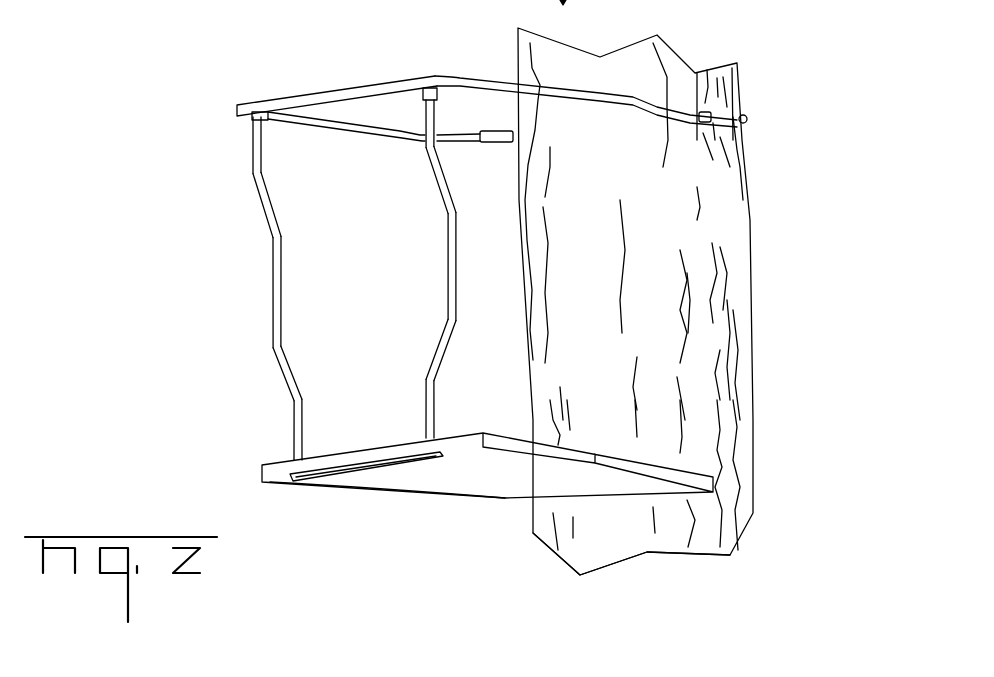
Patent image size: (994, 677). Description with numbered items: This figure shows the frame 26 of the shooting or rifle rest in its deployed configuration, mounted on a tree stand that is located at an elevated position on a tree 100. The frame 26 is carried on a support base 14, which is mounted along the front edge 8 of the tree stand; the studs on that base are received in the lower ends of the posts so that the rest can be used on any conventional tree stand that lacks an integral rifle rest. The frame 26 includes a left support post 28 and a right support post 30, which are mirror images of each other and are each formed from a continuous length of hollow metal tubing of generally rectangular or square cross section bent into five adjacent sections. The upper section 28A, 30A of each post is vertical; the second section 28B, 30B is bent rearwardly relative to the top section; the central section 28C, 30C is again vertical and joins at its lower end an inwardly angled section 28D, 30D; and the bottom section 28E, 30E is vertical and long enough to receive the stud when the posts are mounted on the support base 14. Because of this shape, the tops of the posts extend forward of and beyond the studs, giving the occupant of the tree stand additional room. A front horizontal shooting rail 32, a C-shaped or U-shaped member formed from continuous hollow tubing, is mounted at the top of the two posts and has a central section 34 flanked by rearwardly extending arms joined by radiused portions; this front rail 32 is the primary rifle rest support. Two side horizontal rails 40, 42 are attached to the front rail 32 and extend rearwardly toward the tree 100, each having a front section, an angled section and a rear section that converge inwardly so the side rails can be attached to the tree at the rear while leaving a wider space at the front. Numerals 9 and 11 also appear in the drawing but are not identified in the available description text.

The front edge 8 is at (439, 486).
The base plate underside 9 is at (500, 478).
The wall bottom 11 is at (631, 576).
The support base 14 is at (350, 477).
The rifle rest frame 26 is at (417, 230).
The left support post 28 is at (237, 288).
The upper section 28A is at (299, 148).
The second section 28B is at (280, 215).
The central section 28C is at (285, 277).
The inwardly angled section 28D is at (290, 358).
The bottom section 28E is at (305, 443).
The right support post 30 is at (524, 263).
The upper section 30A is at (437, 117).
The second section 30B is at (452, 175).
The central section 30C is at (456, 289).
The inwardly angled section 30D is at (448, 360).
The bottom section 30E is at (434, 413).
The front rail 32 is at (343, 91).
The central section 34 is at (567, 63).
The side rail 40 is at (367, 133).
The side rail 42 is at (572, 90).
The tree 100 is at (747, 212).